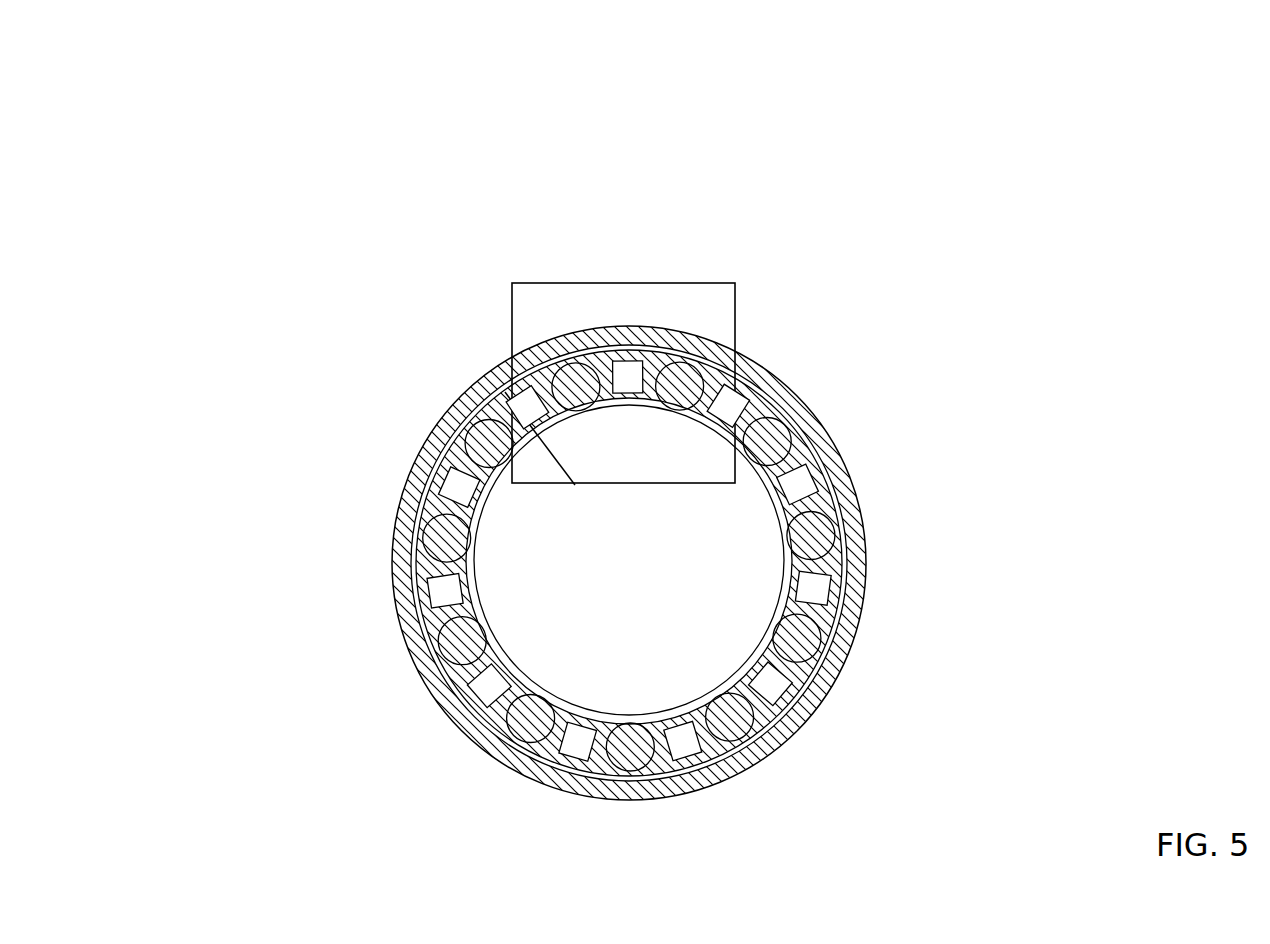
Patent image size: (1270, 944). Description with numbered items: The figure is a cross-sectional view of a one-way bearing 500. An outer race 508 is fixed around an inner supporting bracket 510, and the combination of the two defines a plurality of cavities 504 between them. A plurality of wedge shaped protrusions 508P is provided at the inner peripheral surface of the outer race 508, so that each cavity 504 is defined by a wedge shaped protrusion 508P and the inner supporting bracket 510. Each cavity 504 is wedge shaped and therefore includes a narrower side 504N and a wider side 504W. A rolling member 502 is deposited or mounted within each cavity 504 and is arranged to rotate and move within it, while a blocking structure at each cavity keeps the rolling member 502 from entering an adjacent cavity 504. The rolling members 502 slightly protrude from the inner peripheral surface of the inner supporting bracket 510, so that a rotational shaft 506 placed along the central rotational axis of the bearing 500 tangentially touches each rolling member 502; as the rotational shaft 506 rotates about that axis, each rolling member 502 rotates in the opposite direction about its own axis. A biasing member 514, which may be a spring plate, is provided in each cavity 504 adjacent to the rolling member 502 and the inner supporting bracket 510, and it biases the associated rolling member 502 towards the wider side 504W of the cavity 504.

The one-way bearing 500 is at (1121, 103).
The rolling member 502 is at (722, 540).
The cavities 504 is at (553, 410).
The narrower side 504N is at (483, 680).
The wider side 504W is at (493, 737).
The rotational shaft 506 is at (510, 441).
The outer race 508 is at (681, 362).
The wedge shaped protrusion 508P is at (405, 580).
The inner supporting bracket 510 is at (952, 578).
The biasing member 514 is at (878, 687).